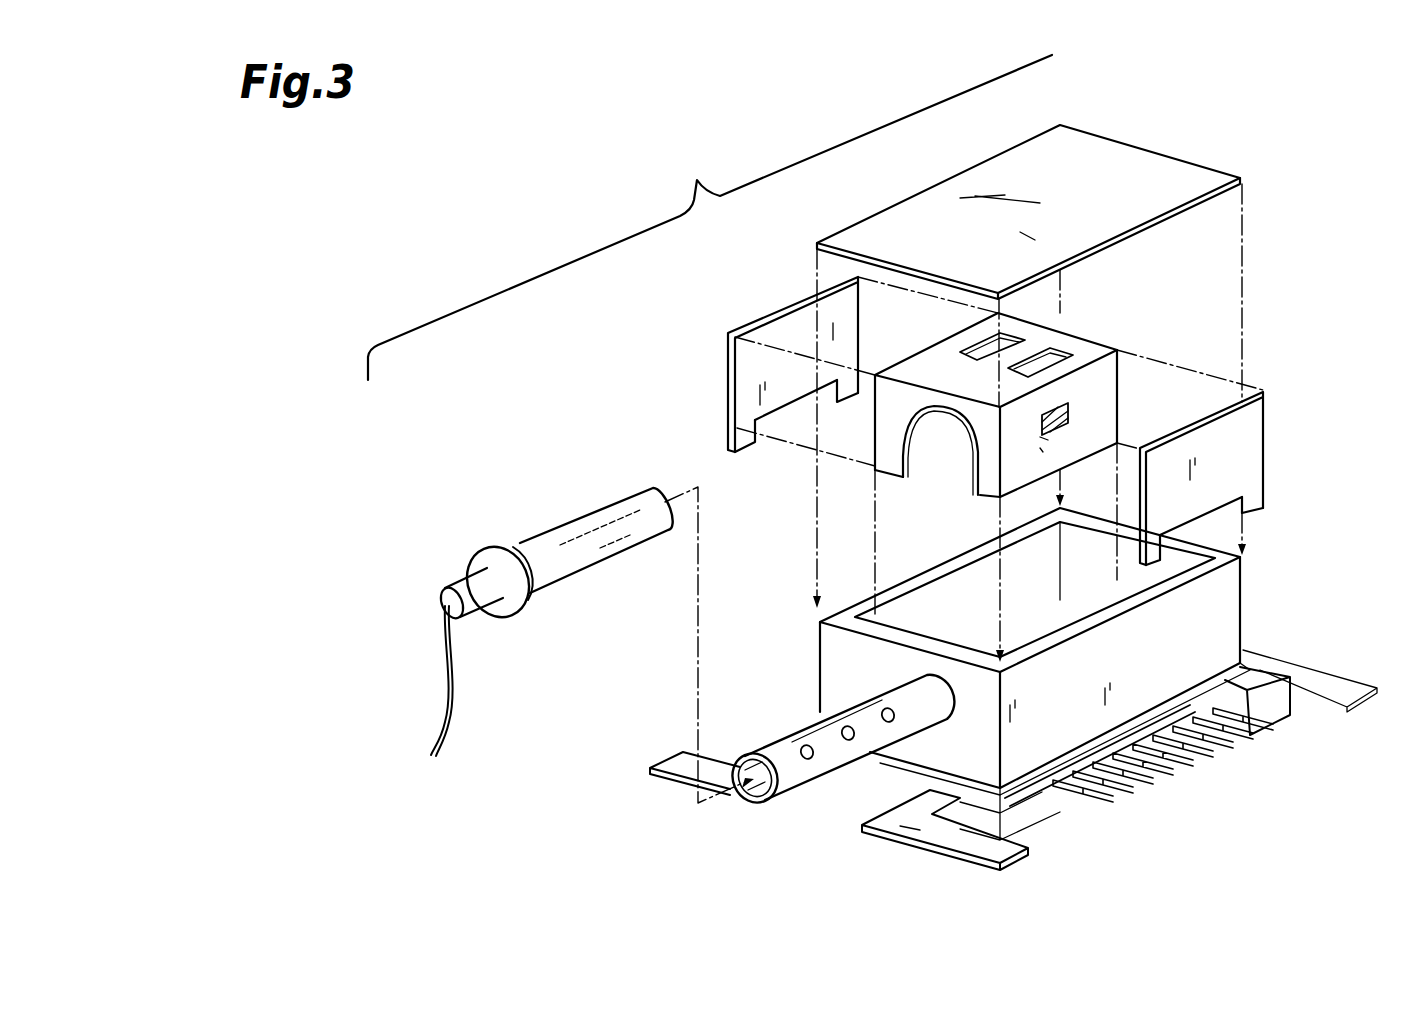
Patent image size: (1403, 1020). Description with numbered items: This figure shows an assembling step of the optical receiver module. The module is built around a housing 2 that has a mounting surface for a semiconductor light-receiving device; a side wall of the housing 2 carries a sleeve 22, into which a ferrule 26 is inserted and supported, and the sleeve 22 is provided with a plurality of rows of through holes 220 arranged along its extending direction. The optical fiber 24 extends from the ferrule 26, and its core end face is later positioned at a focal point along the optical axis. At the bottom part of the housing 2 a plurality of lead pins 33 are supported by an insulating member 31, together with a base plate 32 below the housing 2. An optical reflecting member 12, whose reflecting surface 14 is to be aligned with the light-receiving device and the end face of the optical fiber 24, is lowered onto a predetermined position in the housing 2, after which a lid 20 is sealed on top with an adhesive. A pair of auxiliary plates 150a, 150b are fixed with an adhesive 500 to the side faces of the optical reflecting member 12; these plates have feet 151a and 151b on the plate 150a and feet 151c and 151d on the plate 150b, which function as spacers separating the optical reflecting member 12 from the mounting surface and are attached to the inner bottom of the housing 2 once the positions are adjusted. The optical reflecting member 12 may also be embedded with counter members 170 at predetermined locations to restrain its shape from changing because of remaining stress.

The housing 2 is at (1228, 637).
The optical reflecting member 12 is at (1052, 401).
The reflecting surface 14 is at (915, 440).
The lid 20 is at (1160, 176).
The sleeve 22 is at (838, 718).
The holes 220 is at (832, 716).
The optical fiber 24 is at (450, 675).
The ferrule 26 is at (605, 518).
The insulating member 31 is at (1073, 807).
The board plate 32 is at (1038, 833).
The terminals 33 is at (1287, 726).
The auxiliary plate 150a is at (788, 403).
The auxiliary plate 150b is at (1255, 526).
The foot 151a is at (740, 452).
The foot 151b is at (860, 388).
The foot 151c is at (1260, 503).
The foot 151d is at (1156, 568).
The counter members 170 is at (1060, 355).
The adhesive 500 is at (1082, 400).